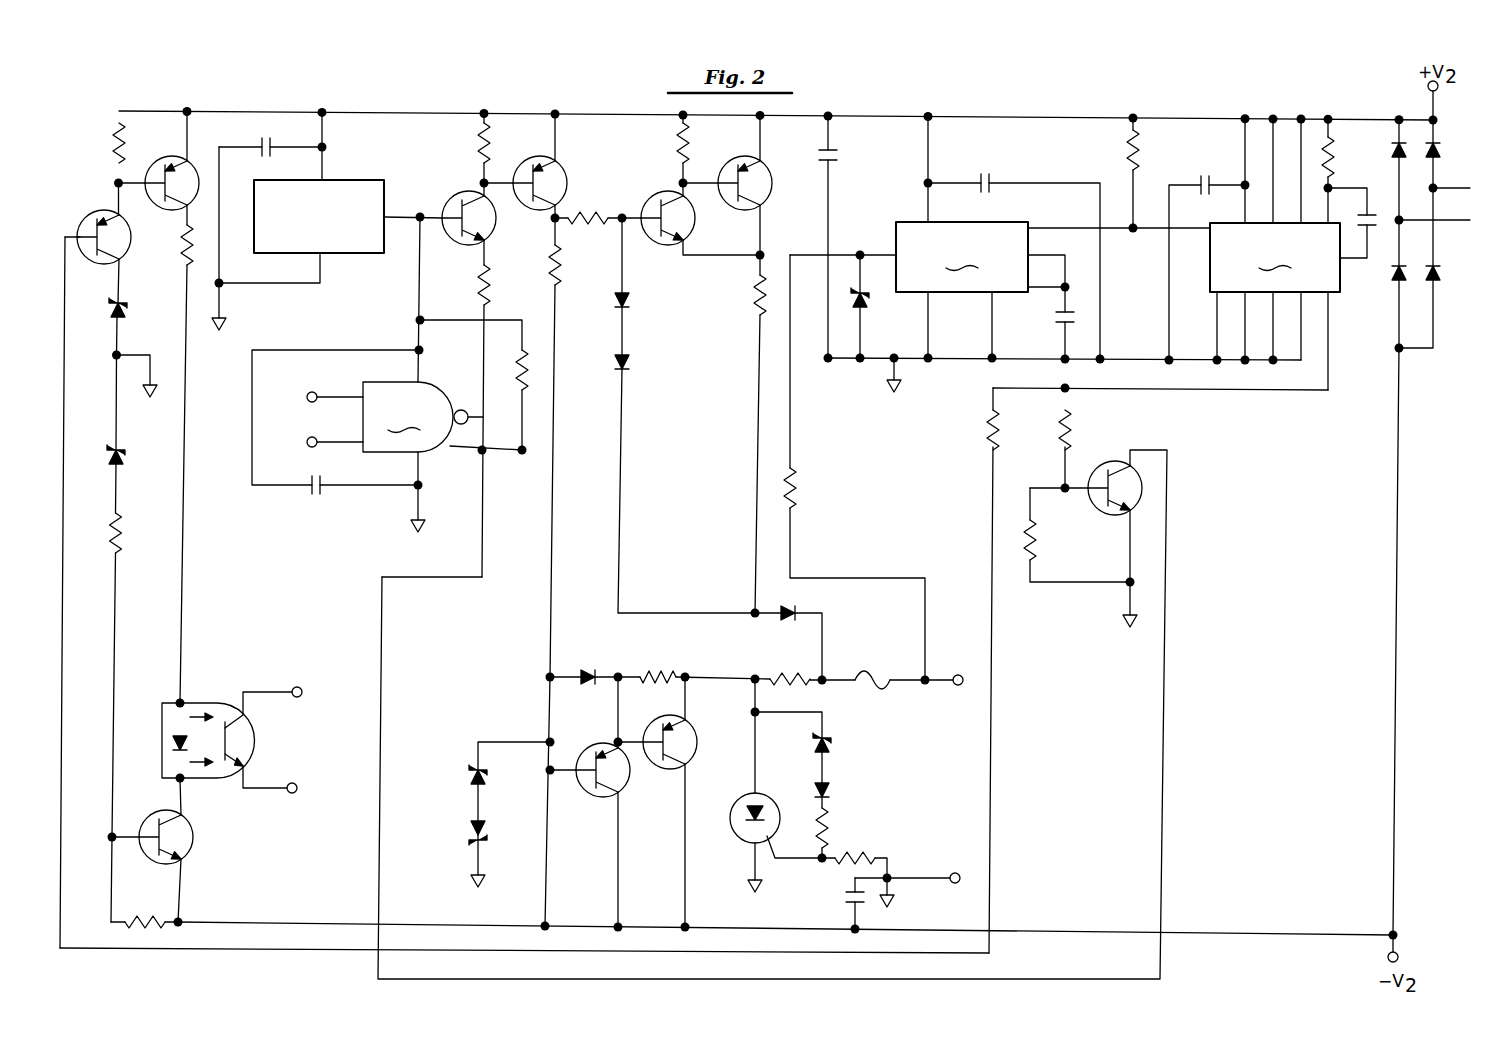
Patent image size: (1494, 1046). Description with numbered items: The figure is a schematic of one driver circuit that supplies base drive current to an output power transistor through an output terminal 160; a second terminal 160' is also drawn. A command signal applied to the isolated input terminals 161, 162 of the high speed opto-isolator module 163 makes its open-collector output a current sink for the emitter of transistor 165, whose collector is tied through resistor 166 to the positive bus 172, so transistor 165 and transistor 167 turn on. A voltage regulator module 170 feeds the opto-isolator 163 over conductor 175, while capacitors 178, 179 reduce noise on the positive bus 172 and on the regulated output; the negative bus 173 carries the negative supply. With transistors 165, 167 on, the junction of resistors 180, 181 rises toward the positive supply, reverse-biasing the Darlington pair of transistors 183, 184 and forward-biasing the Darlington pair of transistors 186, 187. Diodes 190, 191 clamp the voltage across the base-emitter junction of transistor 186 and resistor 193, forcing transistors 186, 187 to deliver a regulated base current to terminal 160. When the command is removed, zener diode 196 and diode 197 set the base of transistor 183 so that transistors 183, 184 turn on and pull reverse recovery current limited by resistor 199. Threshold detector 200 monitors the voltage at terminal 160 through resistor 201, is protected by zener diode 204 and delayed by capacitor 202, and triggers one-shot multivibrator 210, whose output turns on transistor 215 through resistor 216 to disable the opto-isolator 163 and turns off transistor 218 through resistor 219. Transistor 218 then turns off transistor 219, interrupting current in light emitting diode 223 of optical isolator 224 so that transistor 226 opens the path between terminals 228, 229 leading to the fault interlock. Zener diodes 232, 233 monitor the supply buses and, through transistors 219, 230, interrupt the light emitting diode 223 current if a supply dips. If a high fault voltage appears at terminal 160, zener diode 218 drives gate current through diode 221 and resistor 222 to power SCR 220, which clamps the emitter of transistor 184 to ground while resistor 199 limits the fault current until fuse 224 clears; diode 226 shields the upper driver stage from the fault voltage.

The transistor 219 is at (172, 158).
The transistor 218 is at (127, 260).
The zener diode 232 is at (128, 316).
The zener diode 233 is at (128, 461).
The capacitor 178 is at (262, 140).
The voltage regulator module 170 is at (352, 177).
The conductor 175 is at (403, 208).
The resistor 166 is at (481, 149).
The transistor 165 is at (498, 230).
The transistor 167 is at (566, 168).
The resistor 180 is at (598, 210).
The resistor 181 is at (564, 262).
The transistor 186 is at (696, 231).
The transistor 187 is at (742, 159).
The diode 190 is at (637, 304).
The diode 191 is at (637, 363).
The resistor 193 is at (753, 297).
The positive bus 172 is at (1016, 111).
The threshold detector 200 is at (961, 256).
The zener diode 204 is at (868, 302).
The capacitor 202 is at (1049, 319).
The one-shot multivibrator 210 is at (1285, 225).
The resistor 201 is at (802, 485).
The resistor 216 is at (1072, 428).
The transistor 215 is at (1106, 517).
The transistor 226 is at (790, 612).
The resistor 199 is at (775, 670).
The optical isolator 224 is at (870, 675).
The output terminal 160 is at (966, 703).
The output terminal 160' is at (962, 862).
The diode 221 is at (836, 794).
The resistor 222 is at (836, 834).
The power SCR 220 is at (750, 839).
The transistor 183 is at (621, 798).
The transistor 184 is at (692, 760).
The diode 197 is at (468, 778).
The zener diode 196 is at (468, 824).
The opto-isolator module circuit 163 is at (413, 420).
The isolated input terminal 161 is at (308, 391).
The isolated input terminal 162 is at (308, 436).
The capacitor 179 is at (318, 495).
The light emitting diode 223 is at (149, 724).
The terminal 228 is at (300, 686).
The terminal 229 is at (294, 784).
The transistor 230 is at (196, 845).
The negative bus 173 is at (1210, 931).